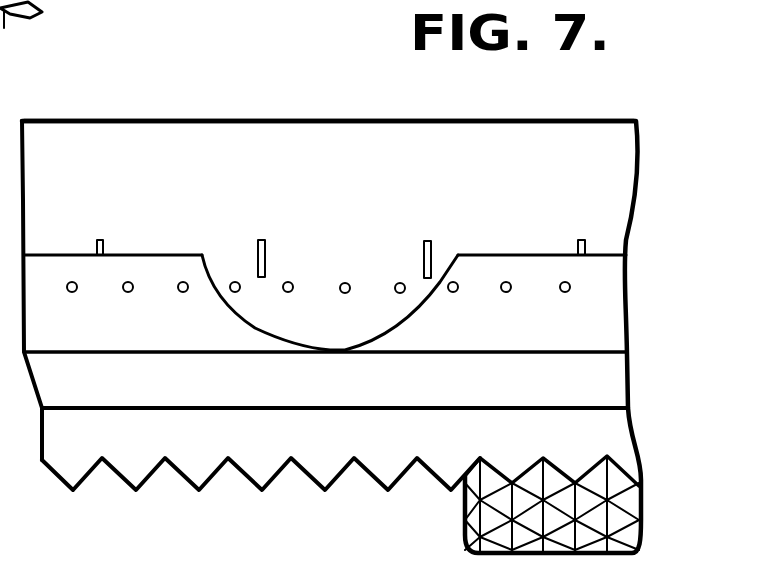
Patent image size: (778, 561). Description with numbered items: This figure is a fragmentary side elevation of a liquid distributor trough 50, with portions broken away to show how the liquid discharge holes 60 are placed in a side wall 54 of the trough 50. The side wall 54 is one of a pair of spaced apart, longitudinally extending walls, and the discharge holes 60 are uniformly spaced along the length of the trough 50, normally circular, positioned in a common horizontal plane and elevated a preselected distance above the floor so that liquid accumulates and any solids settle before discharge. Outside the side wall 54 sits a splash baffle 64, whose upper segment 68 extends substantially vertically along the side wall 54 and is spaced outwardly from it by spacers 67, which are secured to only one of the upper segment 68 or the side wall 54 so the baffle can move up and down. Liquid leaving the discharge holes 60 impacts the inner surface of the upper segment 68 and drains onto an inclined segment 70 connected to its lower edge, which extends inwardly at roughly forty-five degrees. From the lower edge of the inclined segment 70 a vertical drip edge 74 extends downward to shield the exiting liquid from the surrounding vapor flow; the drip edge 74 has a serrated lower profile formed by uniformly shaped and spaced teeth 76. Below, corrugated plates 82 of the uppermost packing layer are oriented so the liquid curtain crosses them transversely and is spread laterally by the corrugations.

The trough 50 is at (478, 110).
The side wall 54 is at (622, 173).
The liquid discharge holes 60 is at (291, 283).
The splash baffle 64 is at (626, 274).
The spacers 67 is at (266, 248).
The upper segment 68 is at (610, 317).
The inclined segment 70 is at (612, 386).
The drip edge 74 is at (618, 441).
The teeth 76 is at (318, 482).
The corrugated plates 82 is at (628, 506).